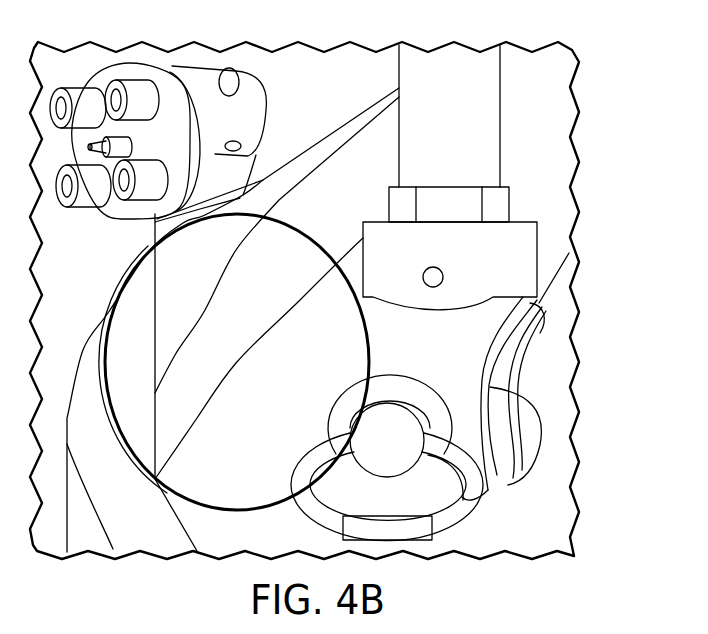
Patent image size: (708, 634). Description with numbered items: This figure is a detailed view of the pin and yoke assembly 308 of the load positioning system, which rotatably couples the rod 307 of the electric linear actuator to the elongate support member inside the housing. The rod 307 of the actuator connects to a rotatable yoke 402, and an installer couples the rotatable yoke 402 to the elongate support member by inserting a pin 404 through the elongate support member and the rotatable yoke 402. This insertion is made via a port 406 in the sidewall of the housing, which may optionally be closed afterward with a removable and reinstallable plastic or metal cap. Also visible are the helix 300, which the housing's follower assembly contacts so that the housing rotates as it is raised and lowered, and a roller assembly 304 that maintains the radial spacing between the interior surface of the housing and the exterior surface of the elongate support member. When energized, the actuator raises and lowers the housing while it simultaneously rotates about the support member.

The helix 300 is at (116, 532).
The roller assembly 304 is at (193, 74).
The rod 307 is at (487, 125).
The pin and yoke assembly 308 is at (547, 253).
The rotatable yoke 402 is at (490, 323).
The pin 404 is at (486, 506).
The port 406 is at (215, 506).